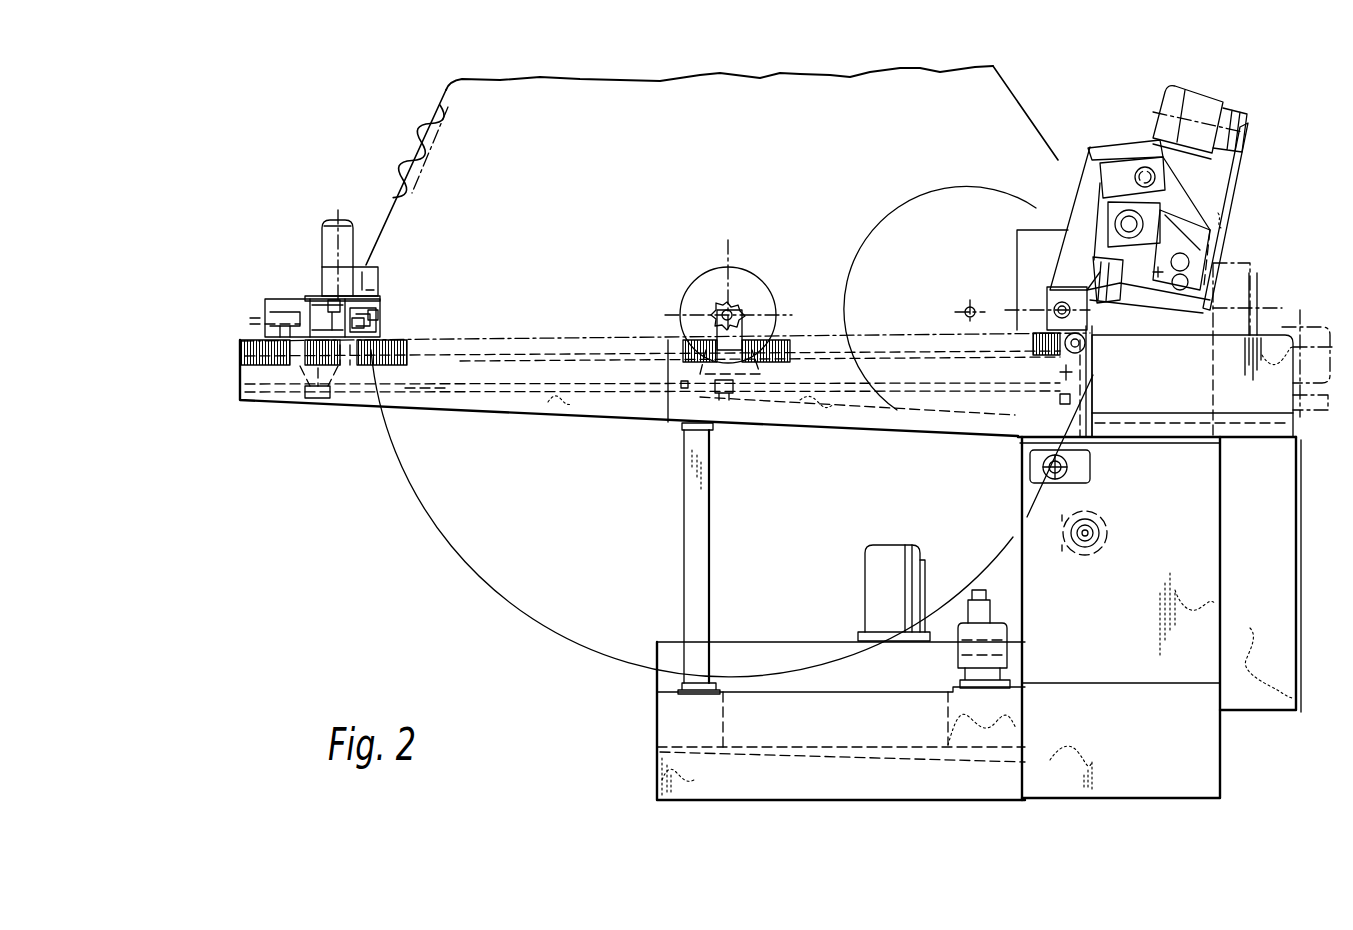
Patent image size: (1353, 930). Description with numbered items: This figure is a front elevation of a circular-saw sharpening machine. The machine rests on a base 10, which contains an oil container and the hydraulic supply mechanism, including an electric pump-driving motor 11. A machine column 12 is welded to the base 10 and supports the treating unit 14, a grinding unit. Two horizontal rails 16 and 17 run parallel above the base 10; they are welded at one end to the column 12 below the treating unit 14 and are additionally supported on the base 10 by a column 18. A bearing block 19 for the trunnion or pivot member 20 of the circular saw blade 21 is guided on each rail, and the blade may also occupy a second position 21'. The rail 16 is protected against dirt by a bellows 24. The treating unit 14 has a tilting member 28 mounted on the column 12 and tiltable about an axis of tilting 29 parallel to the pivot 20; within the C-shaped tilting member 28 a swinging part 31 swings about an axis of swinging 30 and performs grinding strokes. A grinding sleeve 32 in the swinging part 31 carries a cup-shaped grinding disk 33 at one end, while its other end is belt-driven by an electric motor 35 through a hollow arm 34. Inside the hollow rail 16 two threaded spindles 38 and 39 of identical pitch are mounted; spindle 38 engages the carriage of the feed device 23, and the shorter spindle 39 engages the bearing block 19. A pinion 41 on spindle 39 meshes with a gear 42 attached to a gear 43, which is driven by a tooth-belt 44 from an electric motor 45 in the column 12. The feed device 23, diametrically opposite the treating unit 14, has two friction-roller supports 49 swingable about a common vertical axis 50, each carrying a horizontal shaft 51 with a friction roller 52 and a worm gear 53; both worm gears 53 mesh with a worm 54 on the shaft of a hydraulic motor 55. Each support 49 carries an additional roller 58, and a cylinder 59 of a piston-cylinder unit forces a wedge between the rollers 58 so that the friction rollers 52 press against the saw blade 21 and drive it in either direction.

The base 10 is at (668, 722).
The electric pump-driving motor 11 is at (878, 590).
The machine column 12 is at (1008, 504).
The treating unit 14 is at (1281, 217).
The horizontal rail 16 is at (546, 396).
The horizontal rail 17 is at (768, 404).
The column 18 is at (697, 590).
The bearing block 19 is at (757, 312).
The trunnion or pivot member 20 is at (724, 313).
The circular saw blade 21 is at (711, 371).
The tire position 21' is at (927, 296).
The feed device 23 is at (292, 184).
The bellows 24 is at (478, 338).
The tilting member 28 is at (1096, 156).
The axis of tilting 29 is at (1102, 320).
The axis of swinging 30 is at (1133, 140).
The swinging part 31 is at (1167, 228).
The grinding sleeve 32 is at (1193, 316).
The cup-shaped grinding disk 33 is at (1076, 260).
The hollow arm 34 is at (1232, 168).
The electric motor 35 is at (1205, 100).
The threaded spindle 38 is at (425, 392).
The threaded spindle 39 is at (695, 386).
The pinion 41 is at (1055, 375).
The gear 42 is at (1058, 398).
The gear 43 is at (1087, 383).
The tooth-belt 44 is at (1095, 490).
The electric motor 45 is at (1114, 522).
The friction-roller support 49 is at (380, 336).
The vertical axis of swinging 50 is at (340, 242).
The horizontal shaft 51 is at (345, 348).
The friction roller 52 is at (380, 322).
The worm gear 53 is at (378, 311).
The worm 54 is at (328, 400).
The hydraulic motor 55 is at (322, 236).
The additional roller 58 is at (330, 300).
The cylinder 59 is at (270, 304).